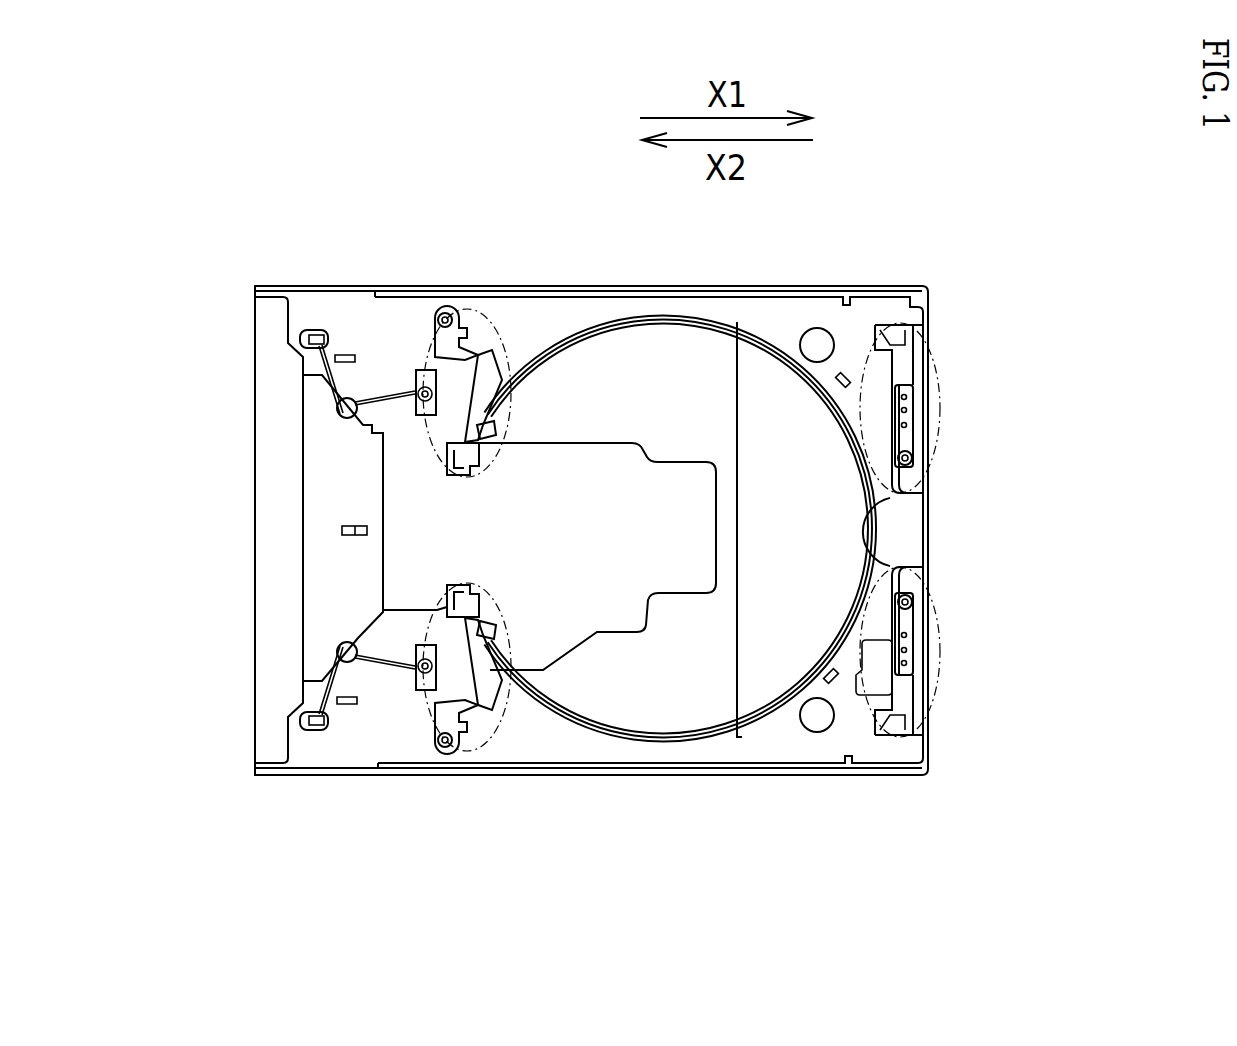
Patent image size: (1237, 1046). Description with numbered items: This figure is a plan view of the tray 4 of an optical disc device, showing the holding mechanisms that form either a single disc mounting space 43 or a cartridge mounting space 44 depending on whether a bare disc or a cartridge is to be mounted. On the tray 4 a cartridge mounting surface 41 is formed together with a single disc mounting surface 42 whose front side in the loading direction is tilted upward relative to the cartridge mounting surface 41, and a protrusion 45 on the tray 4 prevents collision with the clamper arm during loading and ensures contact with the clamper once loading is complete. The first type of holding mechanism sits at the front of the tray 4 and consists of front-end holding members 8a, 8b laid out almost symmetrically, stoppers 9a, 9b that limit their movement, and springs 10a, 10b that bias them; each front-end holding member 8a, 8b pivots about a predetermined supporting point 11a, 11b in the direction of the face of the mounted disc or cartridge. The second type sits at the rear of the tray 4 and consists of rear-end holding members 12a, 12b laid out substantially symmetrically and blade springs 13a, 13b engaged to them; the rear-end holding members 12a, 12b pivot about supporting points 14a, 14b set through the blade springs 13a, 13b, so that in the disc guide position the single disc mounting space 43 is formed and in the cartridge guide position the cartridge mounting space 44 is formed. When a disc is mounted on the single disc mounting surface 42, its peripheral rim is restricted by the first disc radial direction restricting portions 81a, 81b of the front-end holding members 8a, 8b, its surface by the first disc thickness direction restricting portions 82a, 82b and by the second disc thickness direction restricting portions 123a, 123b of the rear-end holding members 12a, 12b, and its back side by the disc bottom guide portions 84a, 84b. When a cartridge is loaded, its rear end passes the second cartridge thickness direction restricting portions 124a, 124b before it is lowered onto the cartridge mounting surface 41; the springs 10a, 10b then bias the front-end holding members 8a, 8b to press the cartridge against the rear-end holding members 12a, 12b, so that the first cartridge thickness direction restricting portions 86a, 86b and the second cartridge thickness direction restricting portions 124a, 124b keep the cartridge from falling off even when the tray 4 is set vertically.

The tray 4 is at (195, 192).
The front-end holding member 8a is at (480, 448).
The front-end holding member 8b is at (480, 612).
The stopper 9a is at (465, 328).
The stopper 9b is at (338, 358).
The spring 10a is at (305, 352).
The spring 10b is at (305, 705).
The supporting point 11a is at (440, 313).
The supporting point 11b is at (448, 747).
The rear-end holding member 12a is at (913, 375).
The rear-end holding member 12b is at (915, 690).
The blade spring 13a is at (912, 430).
The blade spring 13b is at (912, 640).
The supporting point 14a is at (913, 460).
The supporting point 14b is at (913, 603).
The cartridge mounting surface 41 is at (818, 328).
The single disc mounting surface 42 is at (838, 531).
The single disc mounting space 43 is at (709, 722).
The cartridge mounting space 44 is at (758, 300).
The protrusion 45 is at (342, 530).
The first disc radial direction restricting portion 81a is at (503, 388).
The first disc radial direction restricting portion 81b is at (478, 627).
The first disc thickness direction restricting portion 82a is at (450, 477).
The first disc thickness direction restricting portion 82b is at (455, 590).
The disc bottom guide portion 84a is at (496, 428).
The disc bottom guide portion 84b is at (500, 628).
The first cartridge thickness direction restricting portion 86a is at (500, 348).
The first cartridge thickness direction restricting portion 86b is at (500, 697).
The second disc thickness direction restricting portion 123a is at (890, 323).
The second disc thickness direction restricting portion 123b is at (875, 735).
The second cartridge thickness direction restricting portion 124a is at (862, 312).
The second cartridge thickness direction restricting portion 124b is at (892, 718).